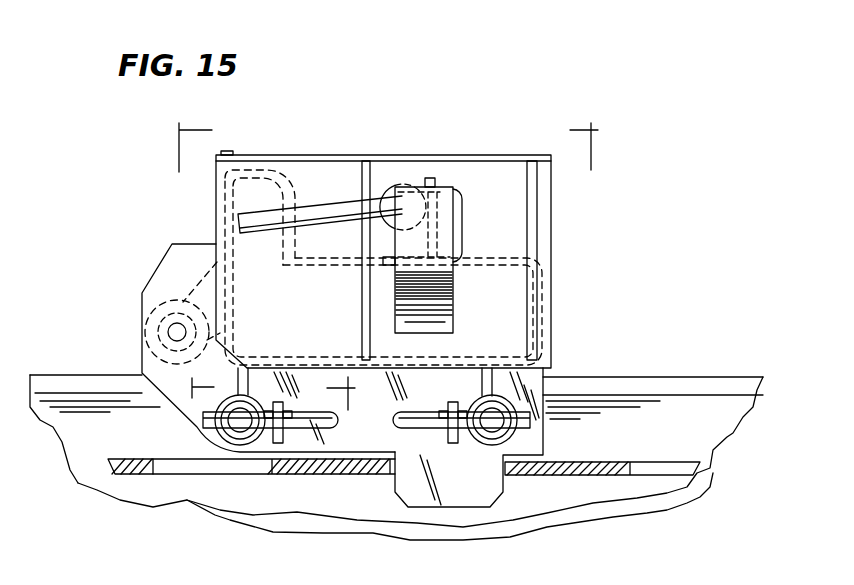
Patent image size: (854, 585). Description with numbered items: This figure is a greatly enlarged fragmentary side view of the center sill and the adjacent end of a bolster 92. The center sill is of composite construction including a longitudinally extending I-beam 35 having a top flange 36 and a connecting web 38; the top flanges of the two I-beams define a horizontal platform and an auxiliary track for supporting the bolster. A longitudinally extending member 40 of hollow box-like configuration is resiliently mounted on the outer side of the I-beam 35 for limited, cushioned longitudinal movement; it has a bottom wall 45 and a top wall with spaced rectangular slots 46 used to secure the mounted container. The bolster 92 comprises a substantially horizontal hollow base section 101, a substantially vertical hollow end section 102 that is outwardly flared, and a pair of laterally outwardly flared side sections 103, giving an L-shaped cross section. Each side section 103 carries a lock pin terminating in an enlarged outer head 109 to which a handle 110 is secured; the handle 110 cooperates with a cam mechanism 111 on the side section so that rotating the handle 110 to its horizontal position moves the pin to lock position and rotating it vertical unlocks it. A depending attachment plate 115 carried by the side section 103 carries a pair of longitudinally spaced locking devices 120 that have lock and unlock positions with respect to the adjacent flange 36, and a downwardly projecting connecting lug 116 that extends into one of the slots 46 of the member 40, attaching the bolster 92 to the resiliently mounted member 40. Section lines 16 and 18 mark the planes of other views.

The section line 16- 16 is at (384, 147).
The section line 18- 18 is at (279, 392).
The I-beam 35 is at (373, 534).
The top flange 36 is at (637, 387).
The web 38 is at (723, 441).
The longitudinally extending member 40 is at (178, 490).
The bottom wall 45 is at (131, 459).
The slot 46 is at (237, 468).
The bolster 92 is at (502, 326).
The base section 101 is at (487, 258).
The end section 102 is at (297, 197).
The side section 103 is at (552, 223).
The outer head 109 is at (410, 183).
The handle 110 is at (325, 222).
The cam mechanism 111 is at (462, 221).
The attachment plate 115 is at (153, 278).
The connecting lug 116 is at (463, 500).
The locking device 120 is at (220, 433).